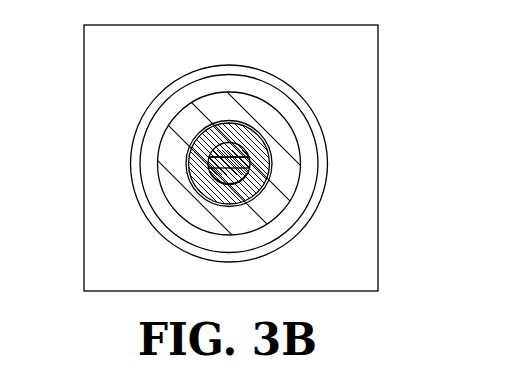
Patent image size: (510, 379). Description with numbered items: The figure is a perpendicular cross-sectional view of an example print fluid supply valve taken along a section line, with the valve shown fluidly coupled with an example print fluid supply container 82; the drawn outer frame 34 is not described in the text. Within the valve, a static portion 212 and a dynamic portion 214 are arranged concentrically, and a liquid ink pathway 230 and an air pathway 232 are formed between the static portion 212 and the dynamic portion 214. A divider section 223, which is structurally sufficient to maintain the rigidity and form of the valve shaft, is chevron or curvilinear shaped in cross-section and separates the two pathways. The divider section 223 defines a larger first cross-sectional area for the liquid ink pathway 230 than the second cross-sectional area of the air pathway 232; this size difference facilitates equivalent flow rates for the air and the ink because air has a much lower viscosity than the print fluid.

The sensor assembly 34 is at (332, 79).
The print fluid supply container 82 is at (176, 133).
The static portion 212 is at (204, 163).
The dynamic portion 214 is at (180, 178).
The liquid ink pathway 230 is at (236, 158).
The divider section 223 is at (229, 177).
The air pathway 232 is at (237, 178).